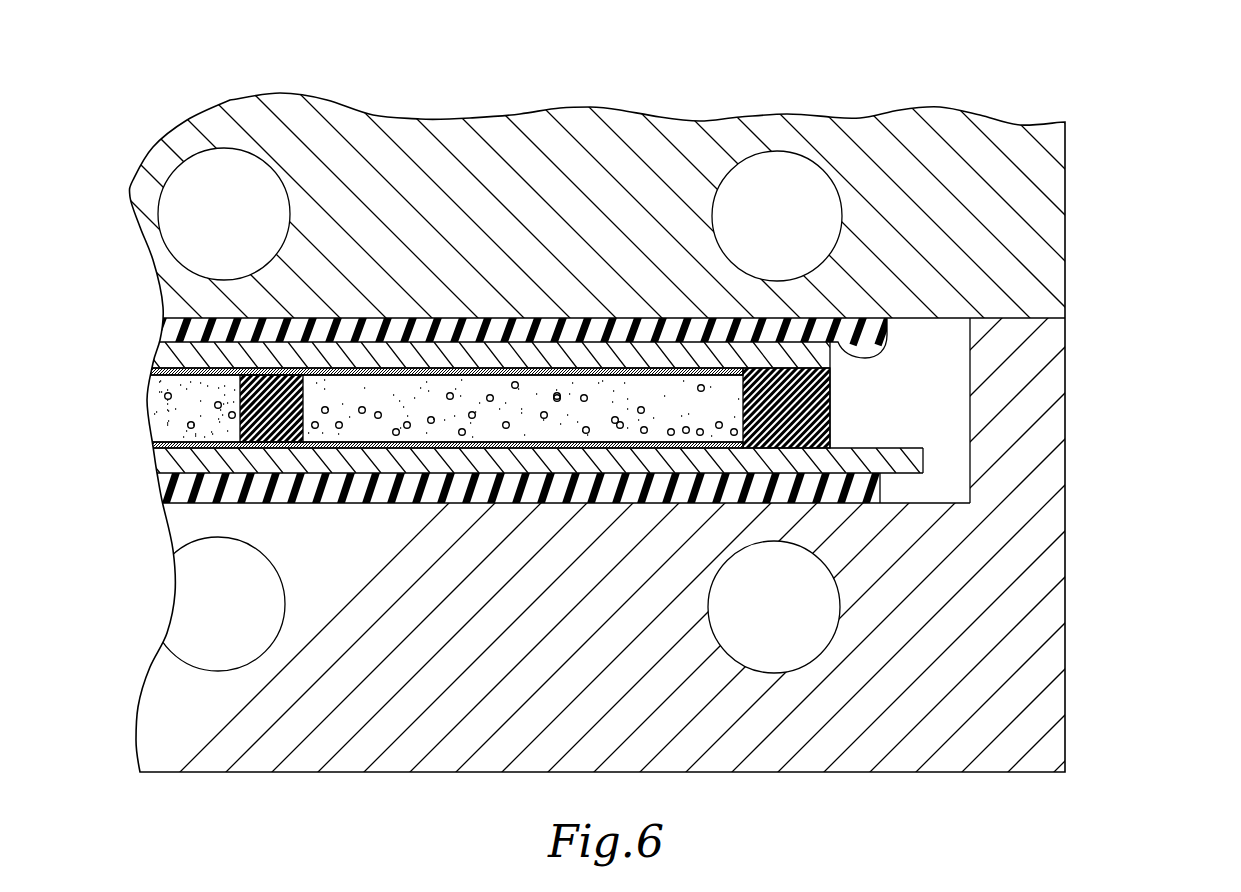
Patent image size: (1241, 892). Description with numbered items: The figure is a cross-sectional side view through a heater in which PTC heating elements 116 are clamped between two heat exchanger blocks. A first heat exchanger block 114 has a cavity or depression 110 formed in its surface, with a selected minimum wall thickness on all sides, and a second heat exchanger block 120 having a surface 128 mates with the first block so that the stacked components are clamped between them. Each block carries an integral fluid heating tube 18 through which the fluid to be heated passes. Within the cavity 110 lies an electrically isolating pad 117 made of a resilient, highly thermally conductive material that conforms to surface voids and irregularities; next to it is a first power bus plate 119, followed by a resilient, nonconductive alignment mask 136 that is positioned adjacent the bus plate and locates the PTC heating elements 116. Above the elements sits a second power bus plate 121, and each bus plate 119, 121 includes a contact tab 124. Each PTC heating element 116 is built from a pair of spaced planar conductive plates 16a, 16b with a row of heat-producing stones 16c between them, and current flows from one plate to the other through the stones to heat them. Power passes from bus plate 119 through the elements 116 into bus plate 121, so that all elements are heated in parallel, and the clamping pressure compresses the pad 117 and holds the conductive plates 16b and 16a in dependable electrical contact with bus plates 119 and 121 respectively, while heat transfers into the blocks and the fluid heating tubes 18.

The conductive plate 16a is at (514, 246).
The conductive plate 16b is at (507, 629).
The stones 16c is at (479, 249).
The fluid heating tube 18 is at (748, 186).
The cavity 110 is at (599, 445).
The first heat exchanger block 114 is at (1047, 615).
The PTC heating elements 116 is at (200, 408).
The electrically isolating pad 117 is at (172, 323).
The first power bus plate 119 is at (507, 444).
The second heat exchanger block 120 is at (1055, 228).
The second power bus plate 121 is at (822, 358).
The contact tab 124 is at (917, 468).
The surface 128 is at (935, 318).
The alignment mask 136 is at (200, 362).